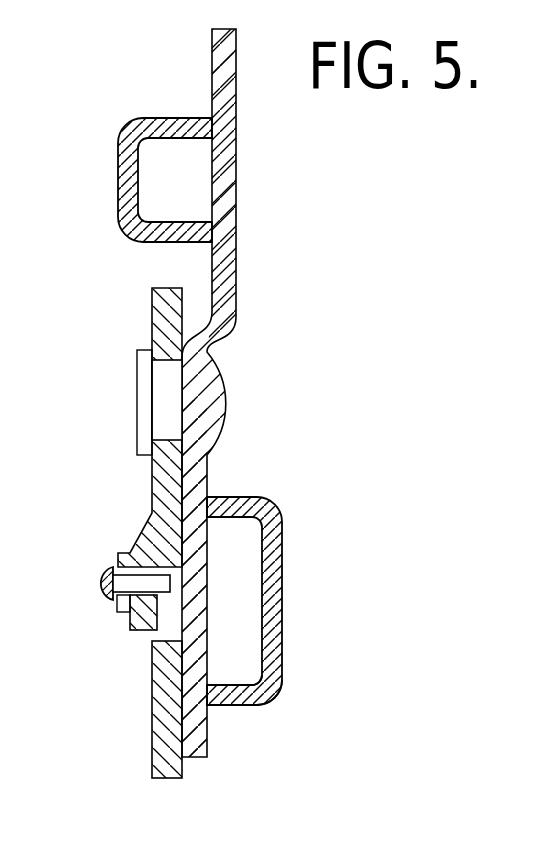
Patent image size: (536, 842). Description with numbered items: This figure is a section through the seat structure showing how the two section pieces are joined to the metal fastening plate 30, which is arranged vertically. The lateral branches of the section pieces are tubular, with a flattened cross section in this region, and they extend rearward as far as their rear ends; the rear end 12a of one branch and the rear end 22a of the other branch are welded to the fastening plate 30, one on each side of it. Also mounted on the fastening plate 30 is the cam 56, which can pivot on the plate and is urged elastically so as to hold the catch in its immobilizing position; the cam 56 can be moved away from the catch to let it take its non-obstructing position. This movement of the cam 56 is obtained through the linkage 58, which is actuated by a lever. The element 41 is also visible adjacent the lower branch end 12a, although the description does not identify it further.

The fastening plate 30 is at (227, 160).
The rear end of lateral branch 22a is at (118, 186).
The cam 56 is at (163, 481).
The linkage 58 is at (95, 593).
The rear end of lateral branch 12a is at (278, 558).
The clip bottom wall 41 is at (238, 697).